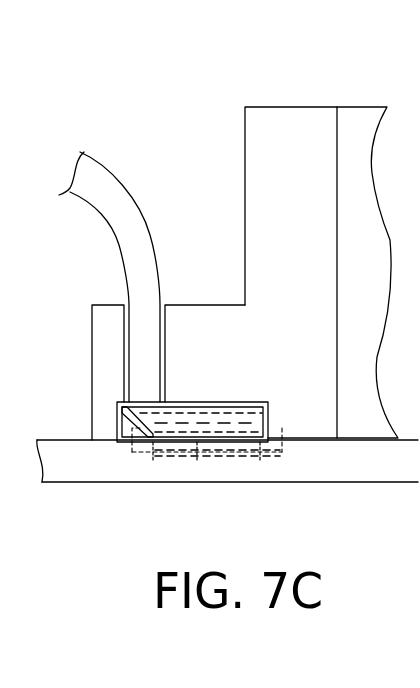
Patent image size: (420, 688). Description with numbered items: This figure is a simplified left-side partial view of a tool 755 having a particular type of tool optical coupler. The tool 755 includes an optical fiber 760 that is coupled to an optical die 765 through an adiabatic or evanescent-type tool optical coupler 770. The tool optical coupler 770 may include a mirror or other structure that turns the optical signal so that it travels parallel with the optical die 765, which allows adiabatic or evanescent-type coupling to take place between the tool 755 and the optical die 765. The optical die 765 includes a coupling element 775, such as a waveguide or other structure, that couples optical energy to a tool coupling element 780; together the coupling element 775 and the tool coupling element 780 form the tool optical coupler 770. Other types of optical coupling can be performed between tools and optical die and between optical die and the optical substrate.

The tool 755 is at (285, 118).
The optical fiber 760 is at (112, 190).
The optical die 765 is at (227, 484).
The tool optical coupler 770 is at (263, 452).
The coupling element 775 is at (197, 450).
The tool coupling element 780 is at (195, 410).